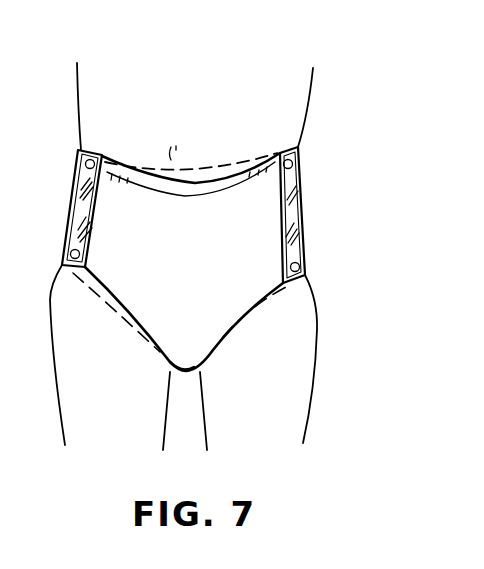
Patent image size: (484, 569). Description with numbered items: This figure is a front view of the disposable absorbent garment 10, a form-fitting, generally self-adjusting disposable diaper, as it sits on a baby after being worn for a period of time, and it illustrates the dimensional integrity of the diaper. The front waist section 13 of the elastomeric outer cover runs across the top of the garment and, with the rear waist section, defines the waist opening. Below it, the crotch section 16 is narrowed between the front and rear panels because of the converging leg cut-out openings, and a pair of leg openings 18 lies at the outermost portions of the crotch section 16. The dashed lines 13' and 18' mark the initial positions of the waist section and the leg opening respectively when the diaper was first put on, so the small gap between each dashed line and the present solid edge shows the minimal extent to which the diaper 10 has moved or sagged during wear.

The disposable absorbent garment 10 is at (338, 127).
The front waist section 13 is at (191, 209).
The initial waist position dashed line 13' is at (191, 132).
The crotch section 16 is at (187, 372).
The leg openings 18 is at (247, 276).
The initial leg opening position dashed line 18' is at (126, 266).